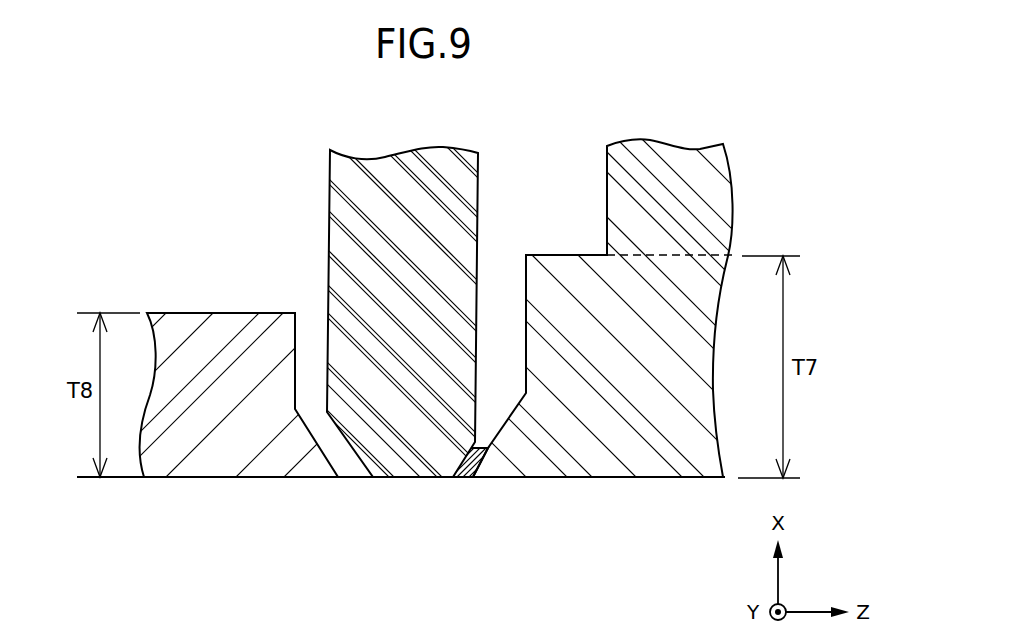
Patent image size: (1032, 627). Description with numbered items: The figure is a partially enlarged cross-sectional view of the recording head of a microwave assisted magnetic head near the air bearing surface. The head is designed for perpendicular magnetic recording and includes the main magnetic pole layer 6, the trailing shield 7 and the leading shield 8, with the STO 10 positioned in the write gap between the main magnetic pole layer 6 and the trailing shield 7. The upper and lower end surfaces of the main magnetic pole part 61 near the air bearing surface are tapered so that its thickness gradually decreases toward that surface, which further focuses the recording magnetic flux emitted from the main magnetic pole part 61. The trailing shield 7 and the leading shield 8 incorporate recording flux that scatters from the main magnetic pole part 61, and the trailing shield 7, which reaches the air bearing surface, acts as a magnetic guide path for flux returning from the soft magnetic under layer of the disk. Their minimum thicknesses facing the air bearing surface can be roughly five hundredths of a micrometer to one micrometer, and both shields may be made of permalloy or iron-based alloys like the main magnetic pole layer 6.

The leading shield 8 is at (222, 447).
The main magnetic pole layer 6 is at (446, 359).
The main magnetic pole part 61 is at (397, 455).
The STO 10 is at (463, 462).
The trailing shield 7 is at (630, 465).